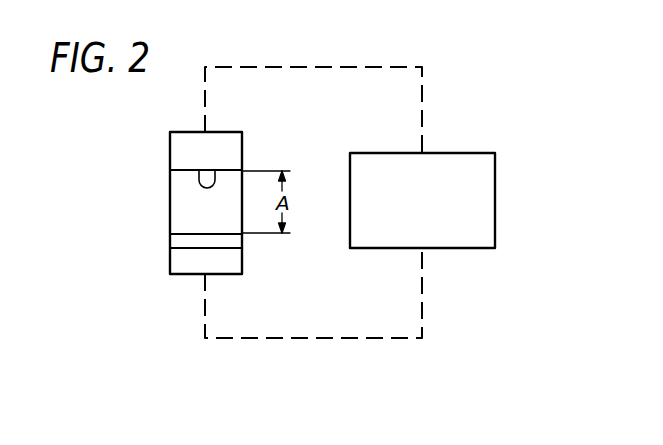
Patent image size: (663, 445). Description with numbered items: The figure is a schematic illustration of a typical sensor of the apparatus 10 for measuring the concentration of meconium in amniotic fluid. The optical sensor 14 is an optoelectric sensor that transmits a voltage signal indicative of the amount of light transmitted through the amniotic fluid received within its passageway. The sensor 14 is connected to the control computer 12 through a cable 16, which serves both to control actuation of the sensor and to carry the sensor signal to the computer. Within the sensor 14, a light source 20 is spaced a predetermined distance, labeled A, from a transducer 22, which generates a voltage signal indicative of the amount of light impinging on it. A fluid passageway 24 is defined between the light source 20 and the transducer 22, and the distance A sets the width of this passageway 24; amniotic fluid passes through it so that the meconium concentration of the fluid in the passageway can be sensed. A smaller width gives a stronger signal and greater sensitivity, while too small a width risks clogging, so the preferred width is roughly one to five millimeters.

The apparatus 10 is at (357, 49).
The control computer 12 is at (496, 176).
The optical sensor 14 is at (148, 211).
The cable 16 is at (270, 66).
The light source 20 is at (199, 183).
The transducer 22 is at (187, 235).
The fluid passageway 24 is at (185, 202).